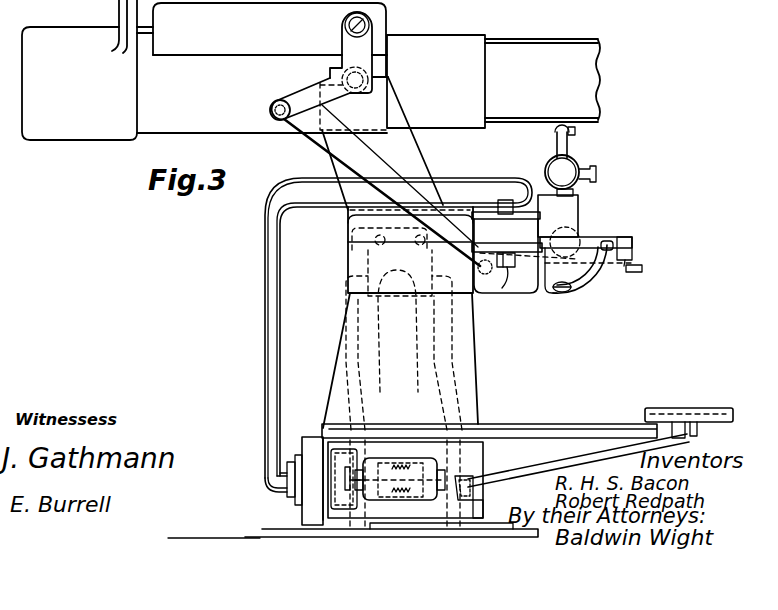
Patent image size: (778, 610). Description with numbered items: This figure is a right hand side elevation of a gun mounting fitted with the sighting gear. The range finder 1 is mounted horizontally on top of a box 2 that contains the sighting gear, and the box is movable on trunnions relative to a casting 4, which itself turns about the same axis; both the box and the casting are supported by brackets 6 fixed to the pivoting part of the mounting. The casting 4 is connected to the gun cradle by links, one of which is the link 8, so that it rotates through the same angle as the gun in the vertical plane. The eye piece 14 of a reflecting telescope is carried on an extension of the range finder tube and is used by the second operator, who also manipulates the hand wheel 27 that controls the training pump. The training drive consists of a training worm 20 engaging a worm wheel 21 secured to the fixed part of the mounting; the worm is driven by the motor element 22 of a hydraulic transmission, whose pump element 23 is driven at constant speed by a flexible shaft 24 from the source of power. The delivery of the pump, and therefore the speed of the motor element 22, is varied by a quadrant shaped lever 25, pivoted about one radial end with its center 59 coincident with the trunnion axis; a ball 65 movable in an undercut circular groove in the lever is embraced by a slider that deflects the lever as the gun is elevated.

The range finder 1 is at (560, 172).
The box 2 is at (568, 207).
The casting 4 is at (493, 192).
The brackets 6 is at (488, 284).
The link 8 is at (300, 130).
The eye piece 14 is at (570, 147).
The training worm 20 is at (400, 500).
The worm wheel 21 is at (468, 474).
The motor element 22 is at (311, 492).
The pump element 23 is at (501, 253).
The flexible shaft 24 is at (508, 288).
The quadrant shaped lever 25 is at (593, 287).
The hand wheel 27 is at (631, 258).
The center of the quadrant lever 59 is at (579, 237).
The ball 65 is at (563, 293).